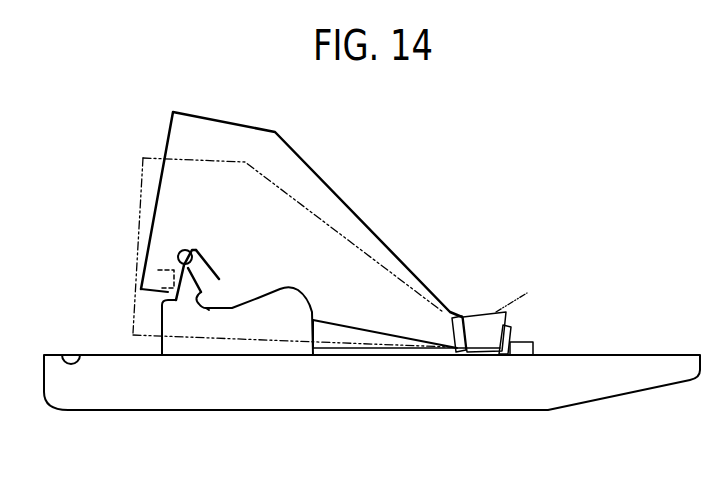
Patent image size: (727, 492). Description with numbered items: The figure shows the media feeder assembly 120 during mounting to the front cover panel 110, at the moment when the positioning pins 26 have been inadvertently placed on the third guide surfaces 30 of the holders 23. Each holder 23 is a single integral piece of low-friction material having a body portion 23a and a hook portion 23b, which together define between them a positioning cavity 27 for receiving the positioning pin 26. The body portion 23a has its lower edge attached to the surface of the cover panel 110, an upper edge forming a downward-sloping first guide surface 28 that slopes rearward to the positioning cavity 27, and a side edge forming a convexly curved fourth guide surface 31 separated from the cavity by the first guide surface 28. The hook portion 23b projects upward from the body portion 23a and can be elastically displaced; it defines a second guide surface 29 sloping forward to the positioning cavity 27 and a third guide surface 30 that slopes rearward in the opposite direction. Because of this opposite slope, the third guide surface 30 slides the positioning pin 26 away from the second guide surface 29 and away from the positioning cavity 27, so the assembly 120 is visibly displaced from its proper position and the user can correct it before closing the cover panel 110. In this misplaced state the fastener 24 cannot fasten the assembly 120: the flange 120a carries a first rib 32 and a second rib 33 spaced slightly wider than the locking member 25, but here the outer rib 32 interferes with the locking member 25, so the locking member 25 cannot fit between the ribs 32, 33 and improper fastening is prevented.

The front cover panel 110 is at (403, 420).
The holder 23 is at (155, 348).
The body portion 23a is at (275, 350).
The hook portion 23b is at (209, 268).
The fastener 24 is at (572, 334).
The locking member 25 is at (518, 357).
The positioning pin 26 is at (176, 282).
The positioning cavity 27 is at (207, 312).
The first guide surface 28 is at (283, 291).
The second guide surface 29 is at (210, 262).
The third guide surface 30 is at (196, 287).
The fourth guide surface 31 is at (304, 306).
The first rib 32 is at (512, 331).
The second rib 33 is at (453, 331).
The media feeder assembly 120 is at (331, 178).
The flange 120a is at (476, 315).